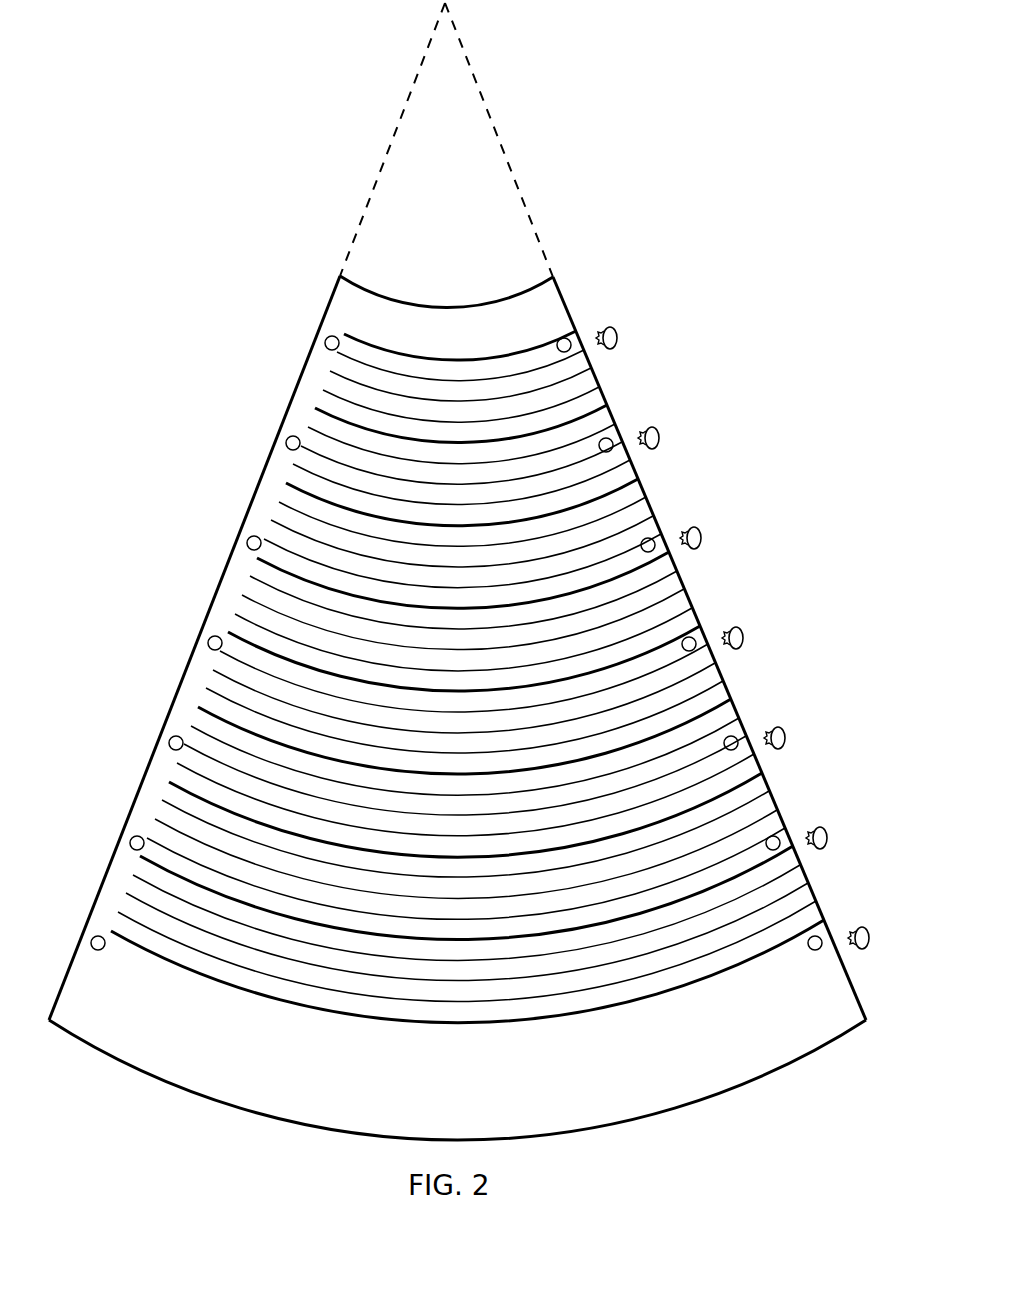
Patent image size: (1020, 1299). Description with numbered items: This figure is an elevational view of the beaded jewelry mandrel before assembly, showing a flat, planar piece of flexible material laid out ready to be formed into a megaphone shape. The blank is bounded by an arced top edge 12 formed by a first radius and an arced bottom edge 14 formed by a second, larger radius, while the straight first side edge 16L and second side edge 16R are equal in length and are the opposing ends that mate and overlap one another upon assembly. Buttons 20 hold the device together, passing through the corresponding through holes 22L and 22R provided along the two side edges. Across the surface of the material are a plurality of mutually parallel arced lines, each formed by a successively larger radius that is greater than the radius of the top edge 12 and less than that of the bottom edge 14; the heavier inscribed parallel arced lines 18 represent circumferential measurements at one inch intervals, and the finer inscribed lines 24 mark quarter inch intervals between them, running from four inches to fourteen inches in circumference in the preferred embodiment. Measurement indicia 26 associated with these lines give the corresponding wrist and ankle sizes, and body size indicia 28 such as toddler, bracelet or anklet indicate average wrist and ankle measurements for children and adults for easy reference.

The top edge 12 is at (527, 293).
The bottom edge 14 is at (713, 1098).
The first side edge 16L is at (212, 600).
The second side edge 16R is at (637, 468).
The inscribed parallel arced lines 18 is at (366, 344).
The buttons 20 is at (699, 538).
The through holes 22L is at (170, 743).
The through holes 22R is at (739, 743).
The inscribed parallel arced lines at one quarter inch intervals 24 is at (572, 379).
The measurement indicia 26 is at (453, 521).
The body size indicia 28 is at (413, 765).